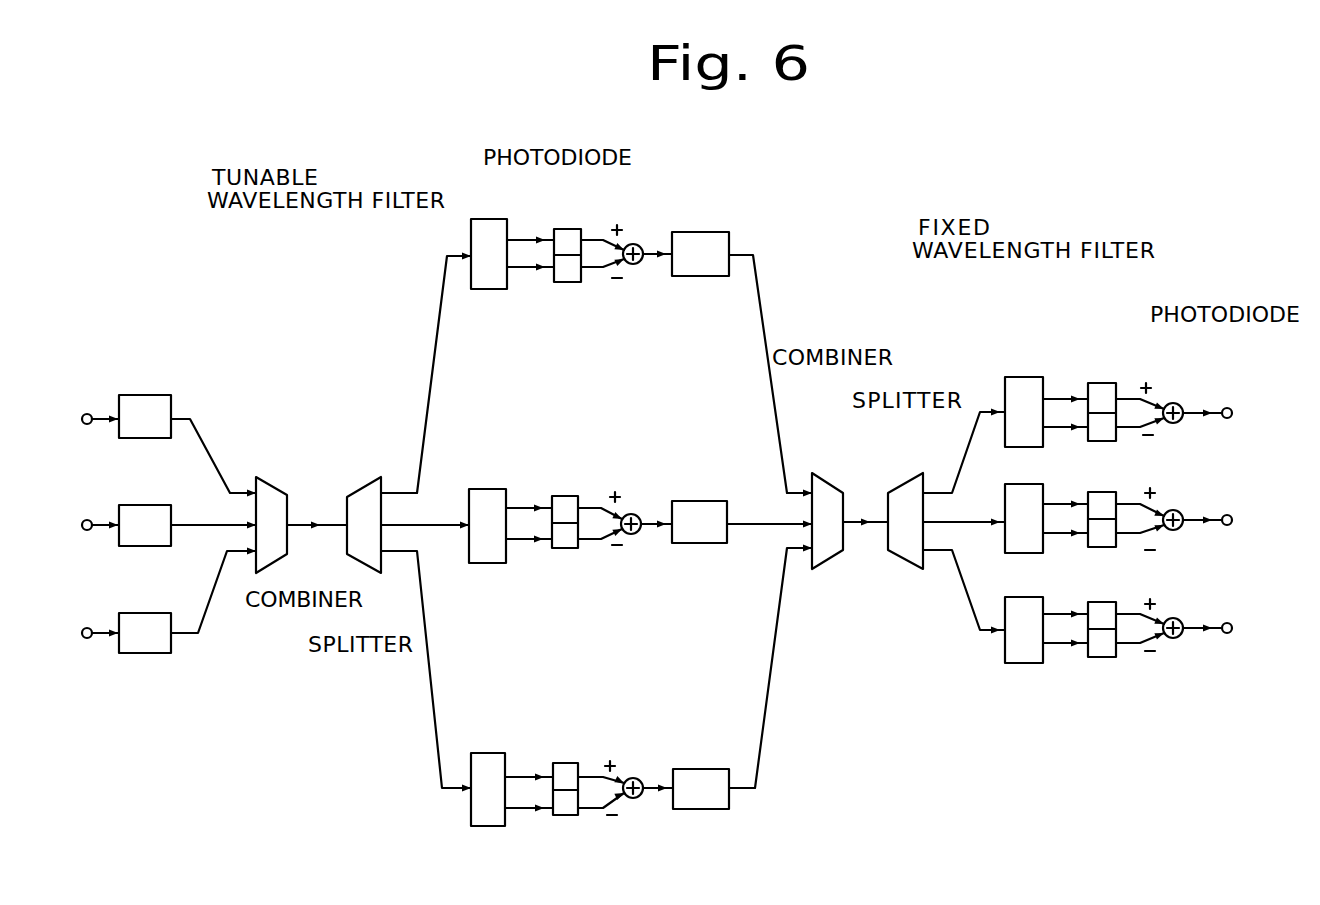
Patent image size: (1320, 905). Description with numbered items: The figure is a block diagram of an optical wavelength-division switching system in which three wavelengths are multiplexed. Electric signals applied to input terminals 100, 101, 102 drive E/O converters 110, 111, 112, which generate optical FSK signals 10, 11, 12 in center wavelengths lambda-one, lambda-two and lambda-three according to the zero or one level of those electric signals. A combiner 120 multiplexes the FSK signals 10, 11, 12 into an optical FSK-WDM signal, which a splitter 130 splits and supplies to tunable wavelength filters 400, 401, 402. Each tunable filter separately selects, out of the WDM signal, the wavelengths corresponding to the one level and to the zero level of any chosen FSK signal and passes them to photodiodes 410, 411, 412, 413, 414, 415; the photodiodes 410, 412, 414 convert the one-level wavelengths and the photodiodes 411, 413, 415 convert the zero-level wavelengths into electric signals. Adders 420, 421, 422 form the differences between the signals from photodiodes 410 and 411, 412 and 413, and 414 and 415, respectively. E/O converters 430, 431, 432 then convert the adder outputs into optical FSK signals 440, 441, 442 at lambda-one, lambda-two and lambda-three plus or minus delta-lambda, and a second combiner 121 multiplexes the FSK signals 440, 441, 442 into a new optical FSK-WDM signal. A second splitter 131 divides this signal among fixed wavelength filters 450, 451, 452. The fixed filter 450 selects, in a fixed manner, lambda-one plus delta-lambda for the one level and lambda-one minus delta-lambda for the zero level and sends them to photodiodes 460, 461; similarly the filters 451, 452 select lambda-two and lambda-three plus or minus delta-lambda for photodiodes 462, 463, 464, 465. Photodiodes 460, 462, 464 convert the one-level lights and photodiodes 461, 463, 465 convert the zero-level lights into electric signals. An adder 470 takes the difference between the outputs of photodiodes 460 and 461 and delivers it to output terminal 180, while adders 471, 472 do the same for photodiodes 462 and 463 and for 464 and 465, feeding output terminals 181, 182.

The input terminal 100 is at (87, 424).
The input terminal 101 is at (87, 530).
The input terminal 102 is at (87, 638).
The E/O converter 110 is at (139, 395).
The E/O converter 111 is at (130, 548).
The E/O converter 112 is at (125, 613).
The optical FSK signal 10 is at (190, 419).
The optical FSK signal 11 is at (178, 527).
The optical FSK signal 12 is at (190, 633).
The combiner 120 is at (301, 556).
The splitter 130 is at (409, 522).
The tunable wavelength filter 400 is at (471, 246).
The tunable wavelength filter 401 is at (481, 489).
The tunable wavelength filter 402 is at (486, 753).
The photodiode 410 is at (554, 229).
The photodiode 411 is at (568, 282).
The photodiode 412 is at (558, 496).
The photodiode 413 is at (566, 548).
The photodiode 414 is at (563, 763).
The photodiode 415 is at (575, 815).
The adder 420 is at (641, 247).
The adder 421 is at (633, 514).
The adder 422 is at (633, 778).
The E/O converter 430 is at (695, 276).
The E/O converter 431 is at (700, 501).
The E/O converter 432 is at (700, 769).
The optical FSK signal 440 is at (760, 305).
The optical FSK signal 441 is at (755, 526).
The optical FSK signal 442 is at (765, 752).
The combiner 121 is at (818, 473).
The splitter 131 is at (905, 473).
The fixed wavelength filter 450 is at (1012, 377).
The fixed wavelength filter 451 is at (1004, 497).
The fixed wavelength filter 452 is at (1004, 603).
The photodiode 460 is at (1098, 383).
The photodiode 461 is at (1088, 438).
The photodiode 462 is at (1105, 492).
The photodiode 463 is at (1088, 547).
The photodiode 464 is at (1105, 602).
The photodiode 465 is at (1103, 657).
The adder 470 is at (1173, 403).
The adder 471 is at (1173, 510).
The adder 472 is at (1173, 618).
The output terminal 180 is at (1232, 413).
The output terminal 181 is at (1227, 515).
The output terminal 182 is at (1227, 623).